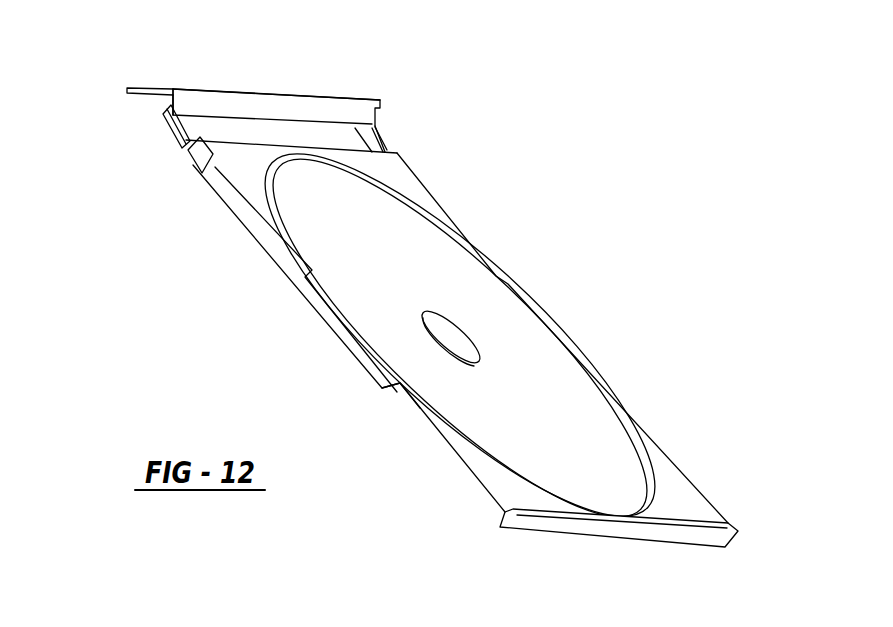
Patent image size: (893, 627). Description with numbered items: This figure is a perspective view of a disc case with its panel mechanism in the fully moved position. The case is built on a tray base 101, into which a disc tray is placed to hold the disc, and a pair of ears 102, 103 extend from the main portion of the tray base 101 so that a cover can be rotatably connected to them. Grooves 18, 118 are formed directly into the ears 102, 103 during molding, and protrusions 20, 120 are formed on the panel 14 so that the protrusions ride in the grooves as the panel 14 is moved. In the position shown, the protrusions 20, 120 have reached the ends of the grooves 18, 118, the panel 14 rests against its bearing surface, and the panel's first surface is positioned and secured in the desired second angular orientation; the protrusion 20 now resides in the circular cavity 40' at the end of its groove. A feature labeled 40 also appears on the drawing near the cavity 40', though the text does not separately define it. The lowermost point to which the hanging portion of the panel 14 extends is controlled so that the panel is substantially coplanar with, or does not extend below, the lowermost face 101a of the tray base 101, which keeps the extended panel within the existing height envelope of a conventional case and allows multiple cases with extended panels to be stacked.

The panel 14 is at (341, 93).
The ear 102 is at (205, 126).
The protrusion 20 is at (172, 115).
The circular cavity 40' is at (140, 136).
The groove 18 is at (172, 116).
The tab 40 is at (181, 170).
The protrusion 120 is at (375, 128).
The ear 103 is at (385, 131).
The groove 118 is at (383, 133).
The tray base 101 is at (325, 312).
The lowermost face of the tray base 101a is at (382, 388).